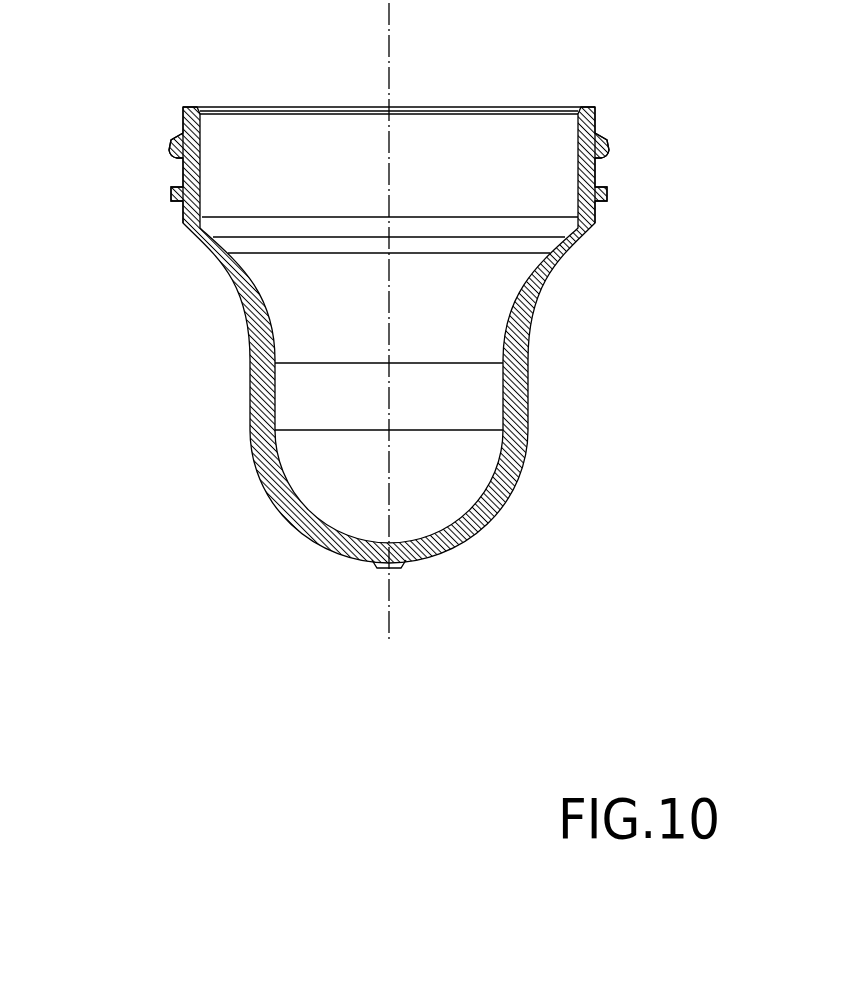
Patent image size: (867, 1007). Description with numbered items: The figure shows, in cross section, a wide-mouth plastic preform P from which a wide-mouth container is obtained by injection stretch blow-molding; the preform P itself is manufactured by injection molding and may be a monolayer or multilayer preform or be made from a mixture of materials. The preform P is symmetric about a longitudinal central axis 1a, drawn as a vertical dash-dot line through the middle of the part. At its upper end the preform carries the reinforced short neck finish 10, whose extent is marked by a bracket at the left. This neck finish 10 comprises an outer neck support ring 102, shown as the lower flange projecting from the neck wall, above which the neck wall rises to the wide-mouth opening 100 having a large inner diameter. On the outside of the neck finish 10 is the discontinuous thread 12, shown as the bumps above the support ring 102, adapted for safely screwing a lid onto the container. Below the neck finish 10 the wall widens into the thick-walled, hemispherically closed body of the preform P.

The wide-mouth preform P is at (127, 485).
The longitudinal central axis 1a is at (390, 47).
The wide-mouth opening 100 is at (258, 104).
The thread 12 is at (607, 138).
The neck finish 10 is at (183, 107).
The neck support ring 102 is at (178, 201).